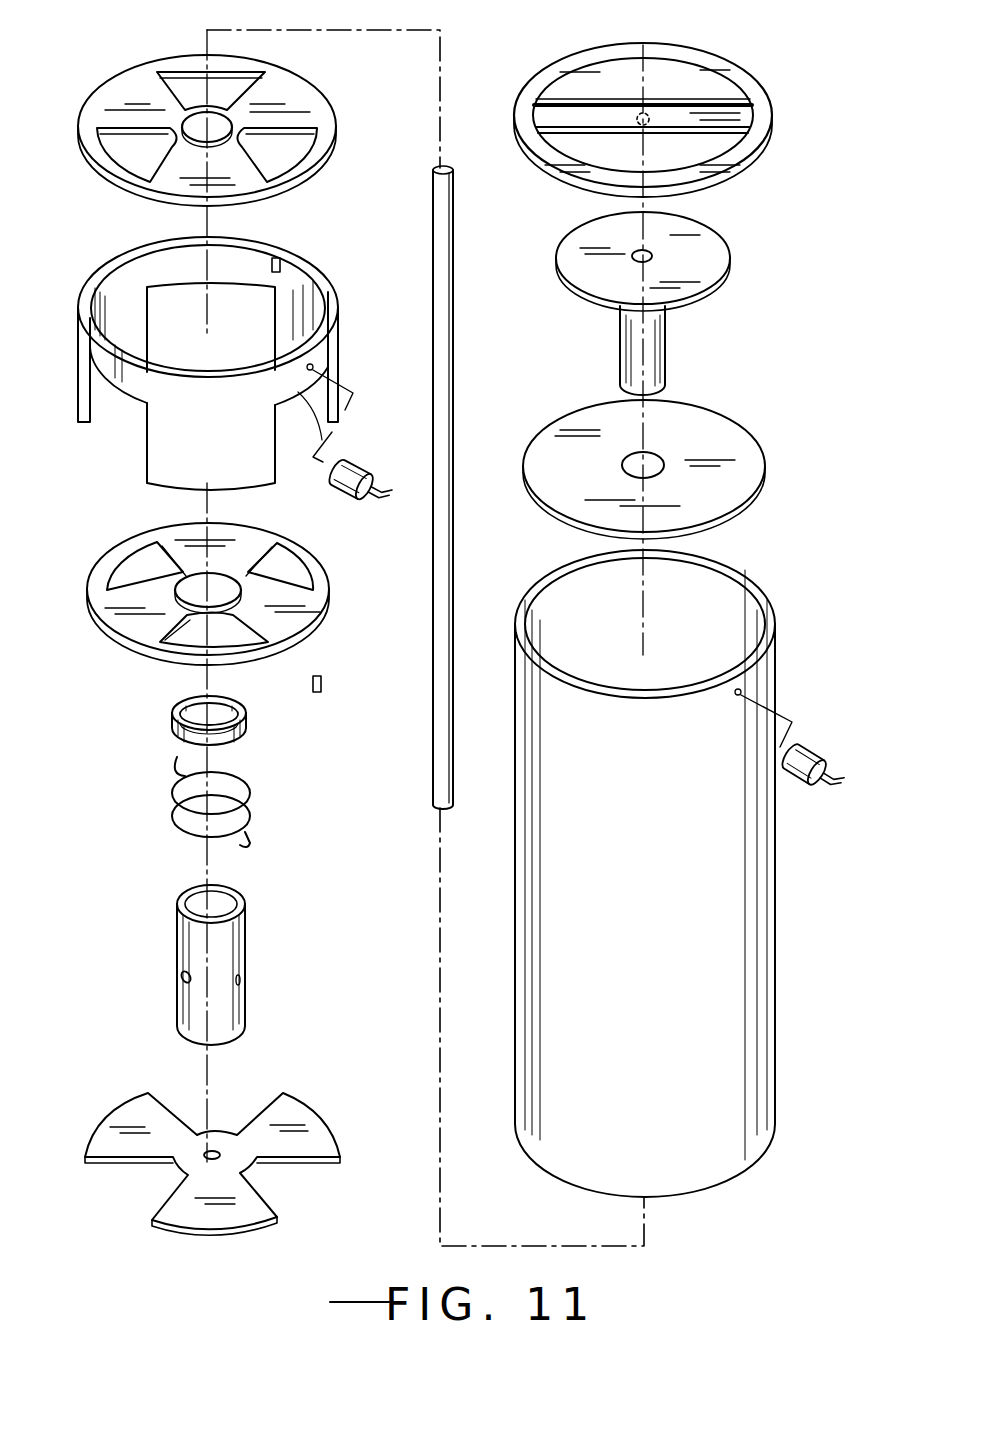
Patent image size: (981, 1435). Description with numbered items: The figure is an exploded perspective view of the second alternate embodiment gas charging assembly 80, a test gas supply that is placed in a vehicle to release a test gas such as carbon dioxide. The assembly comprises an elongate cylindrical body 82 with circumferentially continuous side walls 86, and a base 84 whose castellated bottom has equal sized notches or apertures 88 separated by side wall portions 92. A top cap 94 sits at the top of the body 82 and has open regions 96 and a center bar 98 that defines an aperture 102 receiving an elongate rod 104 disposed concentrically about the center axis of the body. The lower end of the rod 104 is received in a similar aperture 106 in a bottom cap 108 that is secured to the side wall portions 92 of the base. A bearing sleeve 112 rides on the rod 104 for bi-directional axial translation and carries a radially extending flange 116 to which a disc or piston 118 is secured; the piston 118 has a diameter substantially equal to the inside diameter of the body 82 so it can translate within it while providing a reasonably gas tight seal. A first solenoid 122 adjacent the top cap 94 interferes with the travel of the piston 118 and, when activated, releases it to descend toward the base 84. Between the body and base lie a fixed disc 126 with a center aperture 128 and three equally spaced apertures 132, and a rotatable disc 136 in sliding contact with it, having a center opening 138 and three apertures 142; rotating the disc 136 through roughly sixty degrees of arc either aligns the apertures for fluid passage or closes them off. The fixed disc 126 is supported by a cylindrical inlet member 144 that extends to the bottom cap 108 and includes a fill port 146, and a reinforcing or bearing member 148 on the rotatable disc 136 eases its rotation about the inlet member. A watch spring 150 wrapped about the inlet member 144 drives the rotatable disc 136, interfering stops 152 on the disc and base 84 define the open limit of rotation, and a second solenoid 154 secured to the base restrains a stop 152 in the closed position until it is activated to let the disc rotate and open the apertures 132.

The gas charging assembly 80 is at (114, 57).
The cylindrical body 82 is at (770, 620).
The base 84 is at (85, 295).
The side walls 86 is at (650, 980).
The notches or apertures 88 is at (198, 344).
The side wall portions 92 is at (225, 463).
The top cap 94 is at (748, 86).
The open regions 96 is at (643, 97).
The center bar 98 is at (726, 118).
The aperture 102 is at (652, 113).
The elongate rod 104 is at (432, 760).
The aperture 106 is at (203, 1157).
The bottom cap 108 is at (134, 1107).
The bearing sleeve 112 is at (667, 345).
The radially extending flange 116 is at (715, 248).
The disc or piston 118 is at (725, 440).
The first solenoid 122 is at (818, 752).
The fixed disc 126 is at (135, 90).
The center aperture 128 is at (227, 121).
The apertures 132 is at (290, 155).
The rotatable disc 136 is at (132, 627).
The center opening 138 is at (242, 585).
The apertures 142 is at (138, 570).
The cylindrical inlet member 144 is at (246, 930).
The fill port 146 is at (180, 976).
The reinforcing or bearing member 148 is at (248, 722).
The watch spring 150 is at (250, 794).
The interfering stops 152 is at (282, 262).
The second solenoid 154 is at (354, 462).